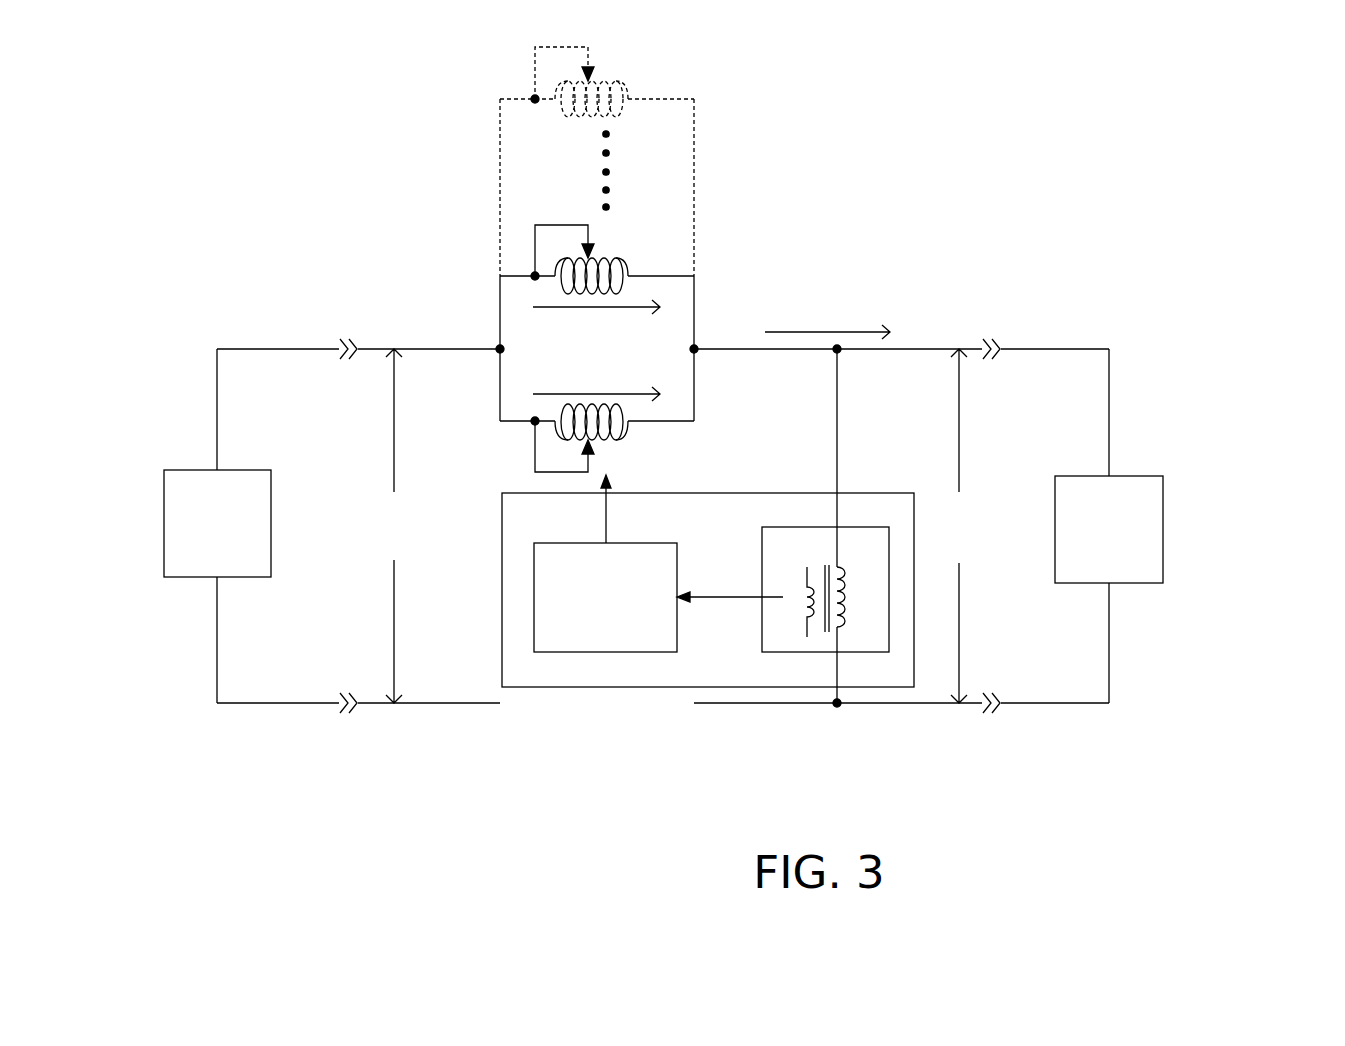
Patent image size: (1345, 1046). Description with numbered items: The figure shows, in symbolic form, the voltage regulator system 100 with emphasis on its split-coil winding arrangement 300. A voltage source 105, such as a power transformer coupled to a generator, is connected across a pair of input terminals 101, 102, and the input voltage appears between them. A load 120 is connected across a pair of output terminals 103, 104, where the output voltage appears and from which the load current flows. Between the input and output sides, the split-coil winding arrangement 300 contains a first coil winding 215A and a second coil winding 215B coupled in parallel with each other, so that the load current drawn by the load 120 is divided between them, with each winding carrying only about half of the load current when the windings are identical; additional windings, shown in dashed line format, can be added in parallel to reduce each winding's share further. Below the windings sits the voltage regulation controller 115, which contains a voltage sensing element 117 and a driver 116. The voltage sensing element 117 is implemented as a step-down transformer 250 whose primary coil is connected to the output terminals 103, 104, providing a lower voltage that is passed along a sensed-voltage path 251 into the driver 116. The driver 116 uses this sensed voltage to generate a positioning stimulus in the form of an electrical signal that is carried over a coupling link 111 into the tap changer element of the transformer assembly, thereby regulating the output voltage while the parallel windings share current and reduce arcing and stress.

The voltage regulator system 100 is at (1270, 253).
The input terminal 101 is at (348, 322).
The input terminal 102 is at (348, 730).
The output terminal 103 is at (990, 322).
The output terminal 104 is at (988, 734).
The voltage source 105 is at (217, 523).
The coupling link 111 is at (606, 536).
The voltage regulation controller 115 is at (708, 590).
The driver 116 is at (605, 597).
The voltage sensing element 117 is at (825, 589).
The load 120 is at (1109, 529).
The first coil winding 215A is at (608, 441).
The second coil winding 215B is at (608, 259).
The step-down transformer 250 is at (789, 588).
The feedback signal 251 is at (700, 597).
The split-coil winding arrangement 300 is at (758, 223).